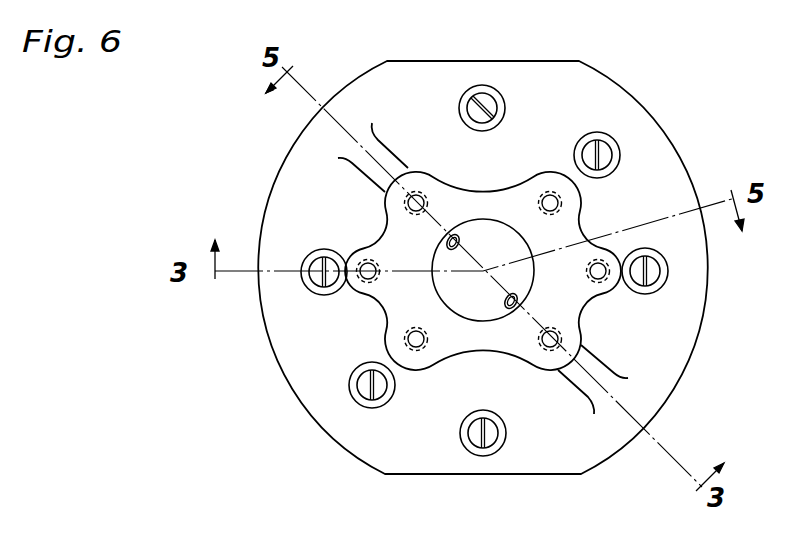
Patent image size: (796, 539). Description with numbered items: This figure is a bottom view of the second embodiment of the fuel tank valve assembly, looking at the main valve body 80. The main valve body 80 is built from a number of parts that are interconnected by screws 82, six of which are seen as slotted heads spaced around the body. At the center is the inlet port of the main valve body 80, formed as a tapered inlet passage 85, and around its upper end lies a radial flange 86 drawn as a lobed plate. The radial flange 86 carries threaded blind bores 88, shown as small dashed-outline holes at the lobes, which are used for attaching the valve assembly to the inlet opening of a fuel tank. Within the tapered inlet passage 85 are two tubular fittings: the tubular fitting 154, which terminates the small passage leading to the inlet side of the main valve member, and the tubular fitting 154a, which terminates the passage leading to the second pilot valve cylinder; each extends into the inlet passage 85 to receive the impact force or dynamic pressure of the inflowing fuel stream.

The main valve body 80 is at (311, 415).
The screws 82 is at (322, 236).
The tapered inlet passage 85 is at (464, 286).
The radial flange 86 is at (402, 299).
The threaded blind bores 88 is at (358, 283).
The tubular fitting 154 is at (506, 304).
The tubular fitting 154a is at (461, 242).